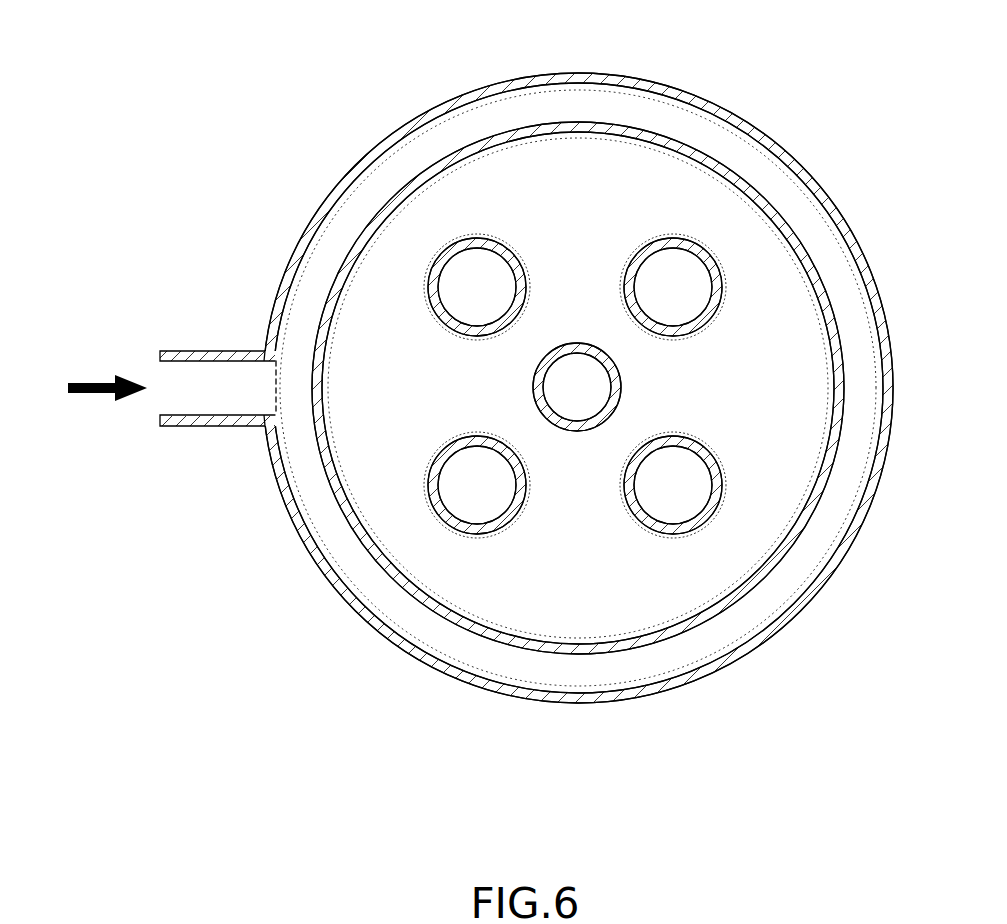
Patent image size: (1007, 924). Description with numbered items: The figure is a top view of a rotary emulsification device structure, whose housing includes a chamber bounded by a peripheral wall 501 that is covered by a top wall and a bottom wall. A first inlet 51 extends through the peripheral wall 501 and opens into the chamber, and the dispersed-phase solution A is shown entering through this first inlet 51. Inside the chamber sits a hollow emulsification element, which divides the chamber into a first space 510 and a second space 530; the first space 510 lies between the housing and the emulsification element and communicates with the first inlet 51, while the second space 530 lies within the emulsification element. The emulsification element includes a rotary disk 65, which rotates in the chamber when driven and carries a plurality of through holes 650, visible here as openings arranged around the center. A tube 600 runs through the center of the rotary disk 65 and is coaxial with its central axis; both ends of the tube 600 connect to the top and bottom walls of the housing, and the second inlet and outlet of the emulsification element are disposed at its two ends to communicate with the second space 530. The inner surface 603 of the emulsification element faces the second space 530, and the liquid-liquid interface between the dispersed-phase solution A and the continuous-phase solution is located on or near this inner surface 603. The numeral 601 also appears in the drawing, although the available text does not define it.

The first space 510 is at (421, 135).
The second space 530 is at (818, 335).
The rotary disk 65 is at (770, 217).
The inner wall 601 is at (330, 292).
The peripheral wall 501 is at (318, 575).
The first inlet 51 is at (177, 390).
The dispersed-phase solution A is at (93, 390).
The tube 600 is at (538, 385).
The through holes 650 is at (655, 485).
The inner surface 603 is at (620, 393).